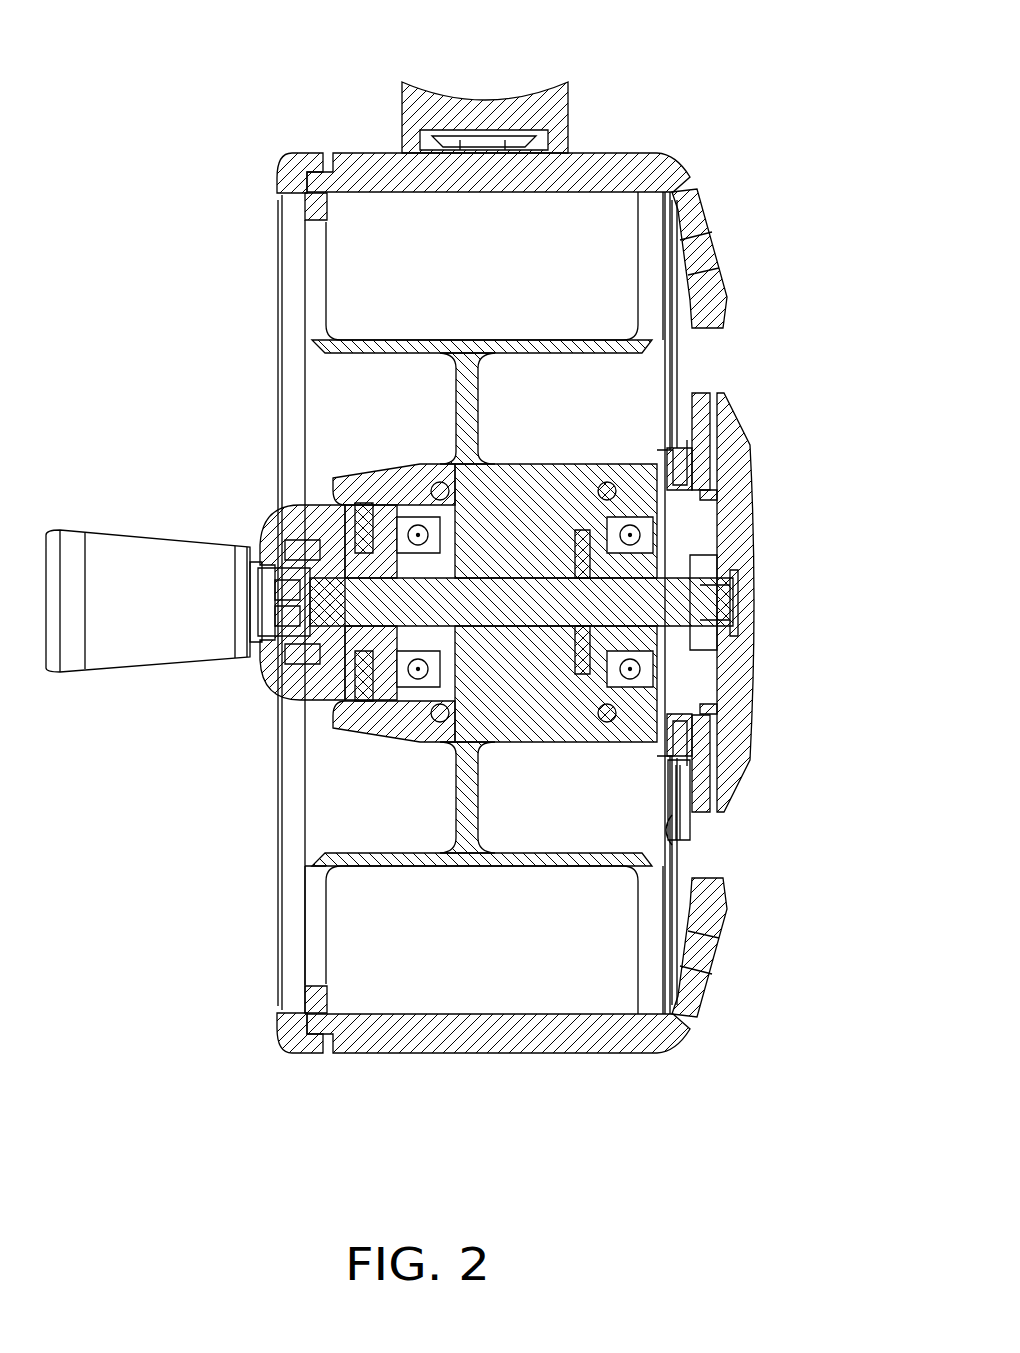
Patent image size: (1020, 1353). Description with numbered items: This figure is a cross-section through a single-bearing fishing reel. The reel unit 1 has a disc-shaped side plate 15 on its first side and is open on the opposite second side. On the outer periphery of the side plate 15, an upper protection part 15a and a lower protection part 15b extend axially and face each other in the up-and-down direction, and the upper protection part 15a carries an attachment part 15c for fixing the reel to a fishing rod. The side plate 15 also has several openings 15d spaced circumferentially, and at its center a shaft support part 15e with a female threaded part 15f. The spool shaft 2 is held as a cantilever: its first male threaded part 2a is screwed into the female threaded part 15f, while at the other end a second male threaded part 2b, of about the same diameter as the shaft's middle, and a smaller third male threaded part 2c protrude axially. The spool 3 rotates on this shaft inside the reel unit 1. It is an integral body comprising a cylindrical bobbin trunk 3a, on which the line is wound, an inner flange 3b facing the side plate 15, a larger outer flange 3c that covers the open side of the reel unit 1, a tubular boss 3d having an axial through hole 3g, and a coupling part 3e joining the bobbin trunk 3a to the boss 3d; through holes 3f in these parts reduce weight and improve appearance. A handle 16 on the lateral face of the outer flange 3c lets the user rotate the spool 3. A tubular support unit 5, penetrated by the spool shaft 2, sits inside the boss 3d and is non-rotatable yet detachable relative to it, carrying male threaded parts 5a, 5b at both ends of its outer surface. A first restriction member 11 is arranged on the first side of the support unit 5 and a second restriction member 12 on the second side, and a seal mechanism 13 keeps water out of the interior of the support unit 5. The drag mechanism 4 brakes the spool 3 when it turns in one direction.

The reel unit 1 is at (673, 150).
The spool shaft 2 is at (750, 565).
The first male threaded part 2a is at (740, 540).
The second male threaded part 2b is at (262, 668).
The third male threaded part 2c is at (240, 660).
The spool 3 is at (645, 265).
The bobbin trunk 3a is at (490, 335).
The inner flange 3b is at (698, 189).
The outer flange 3c is at (305, 218).
The boss 3d is at (555, 464).
The coupling part 3e is at (455, 400).
The through holes 3f is at (315, 950).
The through hole 3g is at (455, 760).
The drag mechanism 4 is at (320, 700).
The support unit 5 is at (670, 822).
The male threaded part 5a is at (695, 470).
The male threaded part 5b is at (365, 480).
The first restriction member 11 is at (722, 495).
The second restriction member 12 is at (370, 505).
The seal mechanism 13 is at (683, 440).
The side plate 15 is at (752, 660).
The upper protection part 15a is at (376, 150).
The lower protection part 15b is at (500, 1053).
The attachment part 15c is at (555, 80).
The openings 15d is at (720, 332).
The shaft support part 15e is at (745, 622).
The female threaded part 15f is at (740, 585).
The handle 16 is at (78, 545).